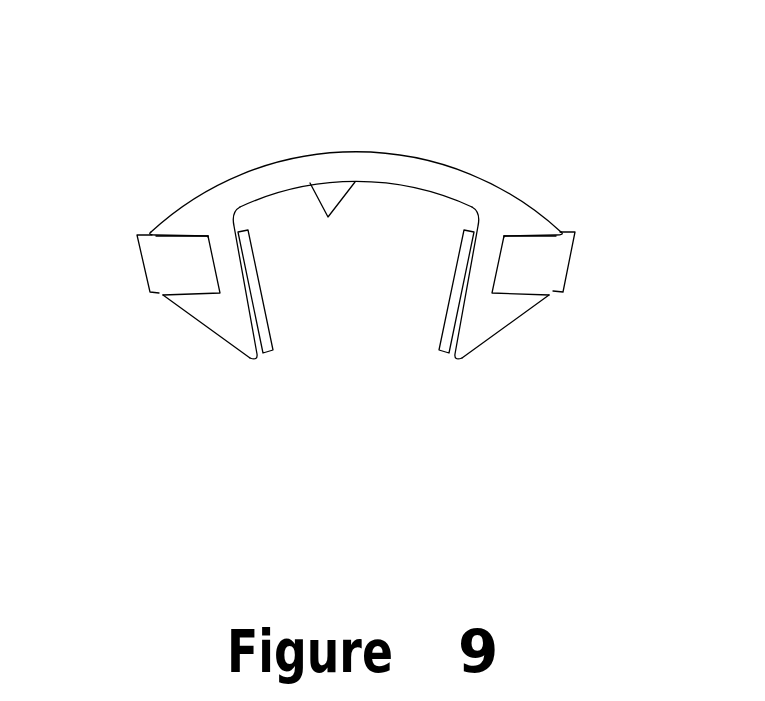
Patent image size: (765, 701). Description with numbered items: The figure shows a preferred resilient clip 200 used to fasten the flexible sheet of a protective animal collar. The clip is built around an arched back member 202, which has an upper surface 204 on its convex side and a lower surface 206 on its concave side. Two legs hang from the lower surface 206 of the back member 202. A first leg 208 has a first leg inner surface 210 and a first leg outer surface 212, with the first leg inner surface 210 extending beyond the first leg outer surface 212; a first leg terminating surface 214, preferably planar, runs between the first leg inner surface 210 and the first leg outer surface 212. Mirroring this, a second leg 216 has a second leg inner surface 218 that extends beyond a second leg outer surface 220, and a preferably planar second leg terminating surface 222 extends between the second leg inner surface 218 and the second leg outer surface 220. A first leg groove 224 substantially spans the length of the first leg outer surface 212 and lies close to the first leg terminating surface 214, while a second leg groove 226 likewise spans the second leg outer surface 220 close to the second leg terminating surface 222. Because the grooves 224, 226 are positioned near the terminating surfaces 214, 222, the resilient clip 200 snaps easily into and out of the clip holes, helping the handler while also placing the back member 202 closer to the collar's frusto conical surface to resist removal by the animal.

The resilient clip 200 is at (543, 90).
The back member 202 is at (243, 148).
The upper surface 204 is at (355, 155).
The lower surface 206 is at (328, 217).
The first leg 208 is at (505, 385).
The first leg inner surface 210 is at (452, 287).
The first leg outer surface 212 is at (572, 265).
The first leg terminating surface 214 is at (505, 328).
The second leg 216 is at (192, 363).
The second leg inner surface 218 is at (260, 285).
The second leg outer surface 220 is at (143, 268).
The second leg terminating surface 222 is at (207, 332).
The first leg groove 224 is at (532, 270).
The second leg groove 226 is at (182, 268).